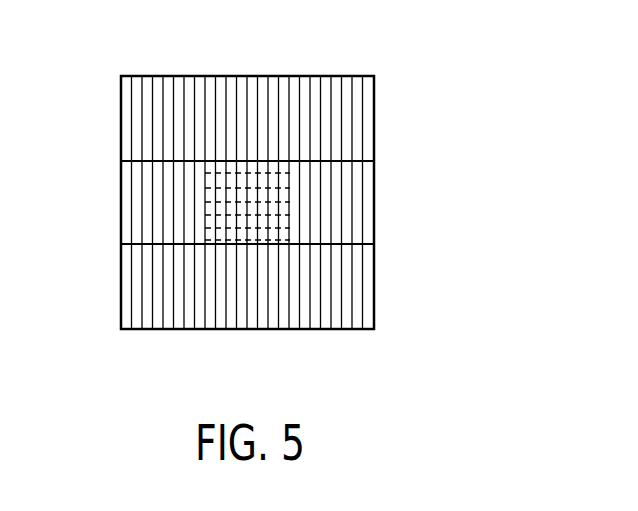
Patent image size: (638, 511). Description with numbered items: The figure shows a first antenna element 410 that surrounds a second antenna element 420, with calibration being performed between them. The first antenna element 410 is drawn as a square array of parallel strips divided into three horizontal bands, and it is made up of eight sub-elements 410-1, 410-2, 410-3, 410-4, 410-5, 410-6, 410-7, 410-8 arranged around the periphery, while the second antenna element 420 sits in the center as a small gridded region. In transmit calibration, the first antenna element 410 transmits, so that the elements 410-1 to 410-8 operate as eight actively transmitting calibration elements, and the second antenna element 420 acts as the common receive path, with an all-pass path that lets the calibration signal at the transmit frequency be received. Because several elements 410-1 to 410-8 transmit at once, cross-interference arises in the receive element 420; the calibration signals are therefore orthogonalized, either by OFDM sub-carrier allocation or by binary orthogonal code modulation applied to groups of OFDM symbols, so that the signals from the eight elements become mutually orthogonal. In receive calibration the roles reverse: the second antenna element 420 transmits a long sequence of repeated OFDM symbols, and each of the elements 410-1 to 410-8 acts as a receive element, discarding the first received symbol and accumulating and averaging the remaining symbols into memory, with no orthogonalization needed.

The first antenna element 410 is at (157, 86).
The active transmitting calibration element 410-1 is at (343, 131).
The active transmitting calibration element 410-2 is at (343, 209).
The active transmitting calibration element 410-3 is at (343, 284).
The active transmitting calibration element 410-4 is at (225, 307).
The active transmitting calibration element 410-5 is at (155, 276).
The active transmitting calibration element 410-6 is at (150, 193).
The active transmitting calibration element 410-7 is at (150, 113).
The active transmitting calibration element 410-8 is at (237, 110).
The second antenna element 420 is at (262, 178).